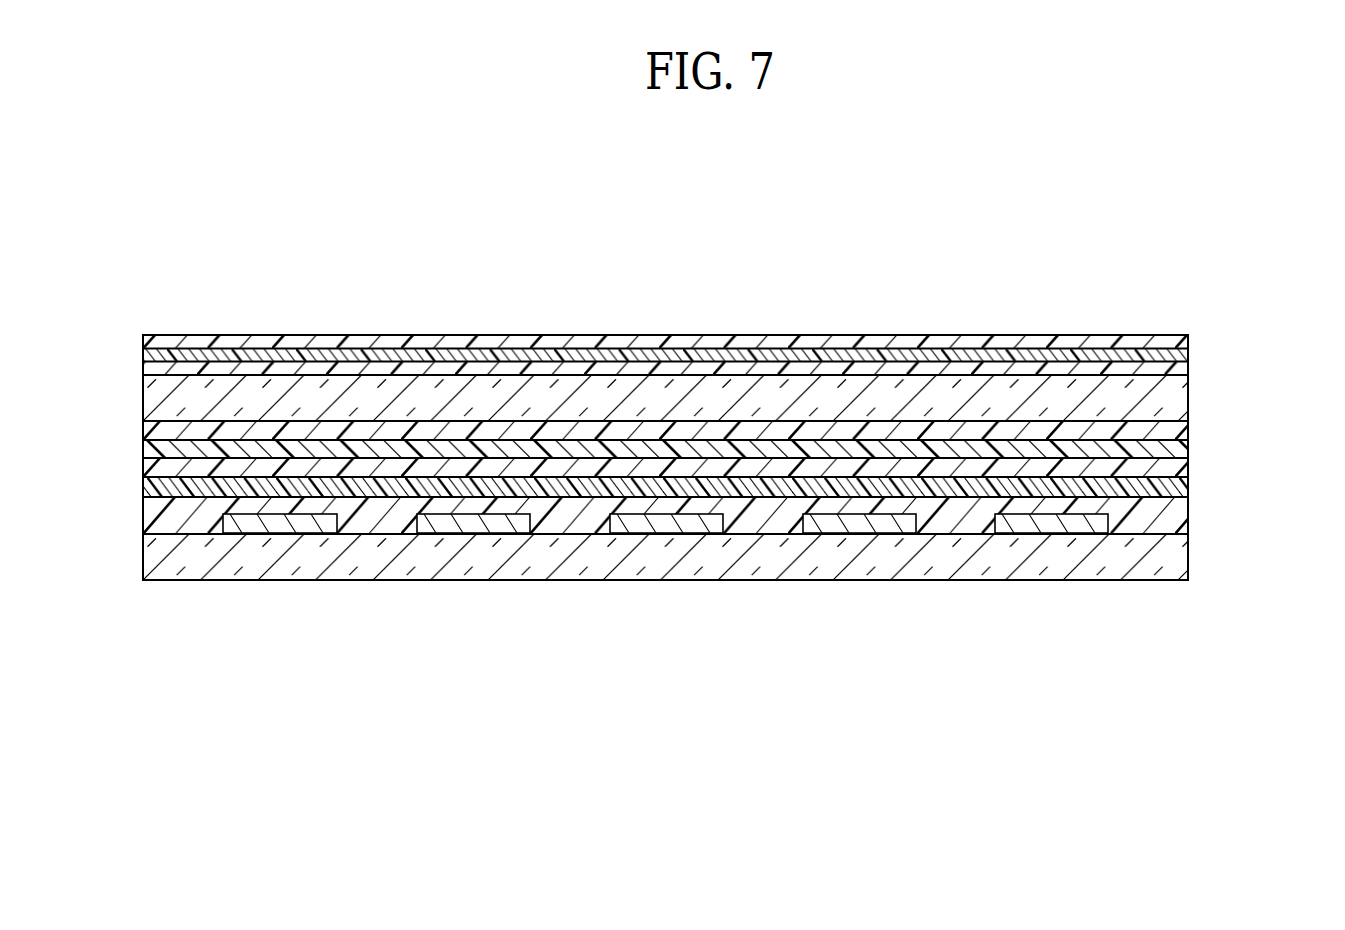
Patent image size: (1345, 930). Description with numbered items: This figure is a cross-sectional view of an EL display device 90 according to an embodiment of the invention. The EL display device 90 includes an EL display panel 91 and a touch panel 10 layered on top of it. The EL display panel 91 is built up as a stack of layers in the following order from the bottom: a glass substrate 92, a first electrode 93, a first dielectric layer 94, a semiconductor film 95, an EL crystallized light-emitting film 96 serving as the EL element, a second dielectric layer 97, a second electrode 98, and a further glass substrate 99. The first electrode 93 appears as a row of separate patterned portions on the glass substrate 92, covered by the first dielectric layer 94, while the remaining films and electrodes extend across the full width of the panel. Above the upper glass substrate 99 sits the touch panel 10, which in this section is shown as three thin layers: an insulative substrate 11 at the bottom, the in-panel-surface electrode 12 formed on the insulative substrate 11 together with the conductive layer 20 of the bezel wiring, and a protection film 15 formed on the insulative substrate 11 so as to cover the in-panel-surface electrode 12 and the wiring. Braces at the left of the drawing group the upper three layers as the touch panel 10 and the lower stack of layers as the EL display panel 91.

The EL display device 90 is at (657, 280).
The touch panel 10 is at (135, 337).
The protection film 15 is at (1188, 337).
The conductive layer 20 is at (1188, 350).
The in-panel-surface electrode 12 is at (665, 355).
The insulative substrate 11 is at (1188, 365).
The EL display panel 91 is at (135, 378).
The glass substrate 99 is at (1188, 395).
The second electrode 98 is at (1188, 427).
The second dielectric layer 97 is at (1188, 445).
The EL crystallized light-emitting film 96 is at (1188, 463).
The semiconductor film 95 is at (1188, 480).
The first dielectric layer 94 is at (1188, 510).
The first electrode 93 is at (302, 527).
The glass substrate 92 is at (1188, 555).